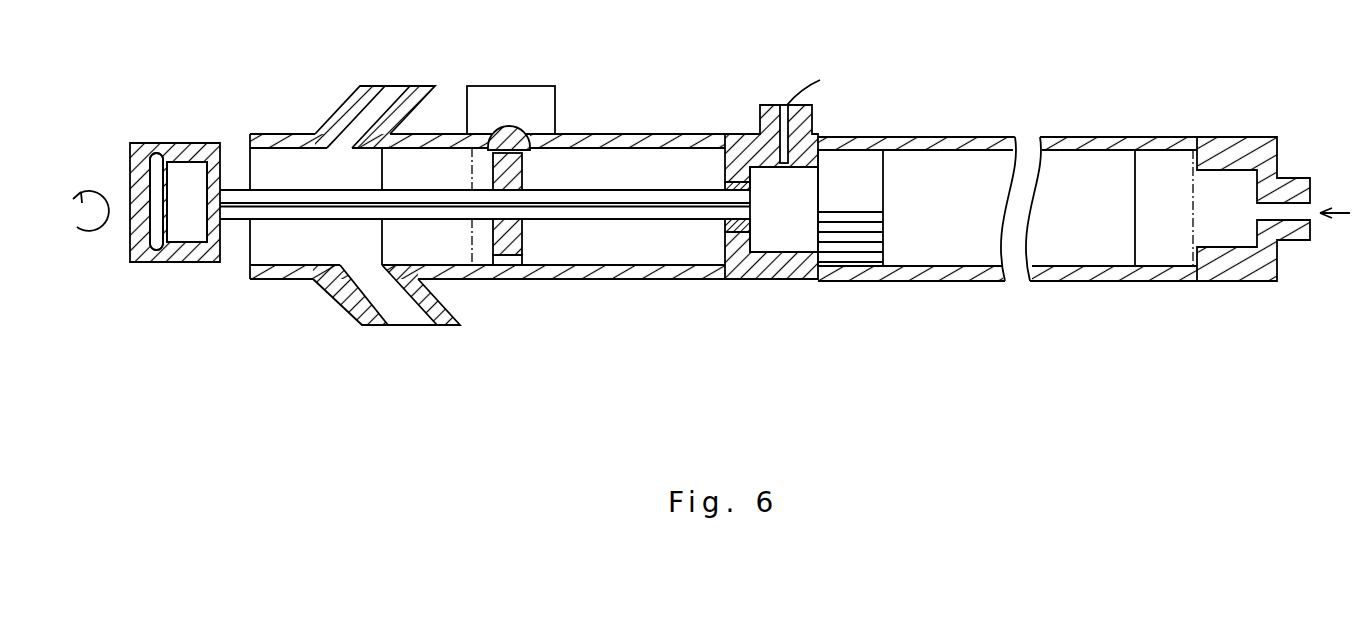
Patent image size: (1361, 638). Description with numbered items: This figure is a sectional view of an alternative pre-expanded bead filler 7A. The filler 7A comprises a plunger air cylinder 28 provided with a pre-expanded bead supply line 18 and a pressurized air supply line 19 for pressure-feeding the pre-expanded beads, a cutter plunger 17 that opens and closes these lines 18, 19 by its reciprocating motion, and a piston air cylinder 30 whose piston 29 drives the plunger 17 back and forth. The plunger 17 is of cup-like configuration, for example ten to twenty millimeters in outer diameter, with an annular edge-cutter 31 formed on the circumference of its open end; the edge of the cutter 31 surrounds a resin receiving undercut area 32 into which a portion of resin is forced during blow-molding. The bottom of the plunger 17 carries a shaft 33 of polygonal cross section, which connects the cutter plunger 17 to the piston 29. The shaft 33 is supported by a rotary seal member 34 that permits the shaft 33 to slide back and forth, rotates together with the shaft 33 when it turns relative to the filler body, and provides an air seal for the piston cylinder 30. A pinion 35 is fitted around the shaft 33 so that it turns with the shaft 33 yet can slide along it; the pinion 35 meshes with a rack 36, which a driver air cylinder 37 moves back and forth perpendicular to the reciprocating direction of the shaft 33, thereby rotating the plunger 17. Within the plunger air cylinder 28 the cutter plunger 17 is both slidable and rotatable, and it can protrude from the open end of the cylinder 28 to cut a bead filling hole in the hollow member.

The plunger 17 is at (186, 267).
The pre-expanded bead supply line 18 is at (403, 320).
The pressurized air supply line 19 is at (417, 78).
The plunger air cylinder 28 is at (273, 135).
The piston 29 is at (858, 262).
The piston air cylinder 30 is at (957, 137).
The annular edge-cutter 31 is at (153, 153).
The resin receiving undercut area 32 is at (158, 228).
The shaft 33 is at (655, 216).
The rotary seal member 34 is at (738, 262).
The pinion 35 is at (510, 265).
The rack 36 is at (523, 132).
The driver air cylinder 37 is at (520, 97).
The pre-expanded bead filler 7A is at (787, 88).